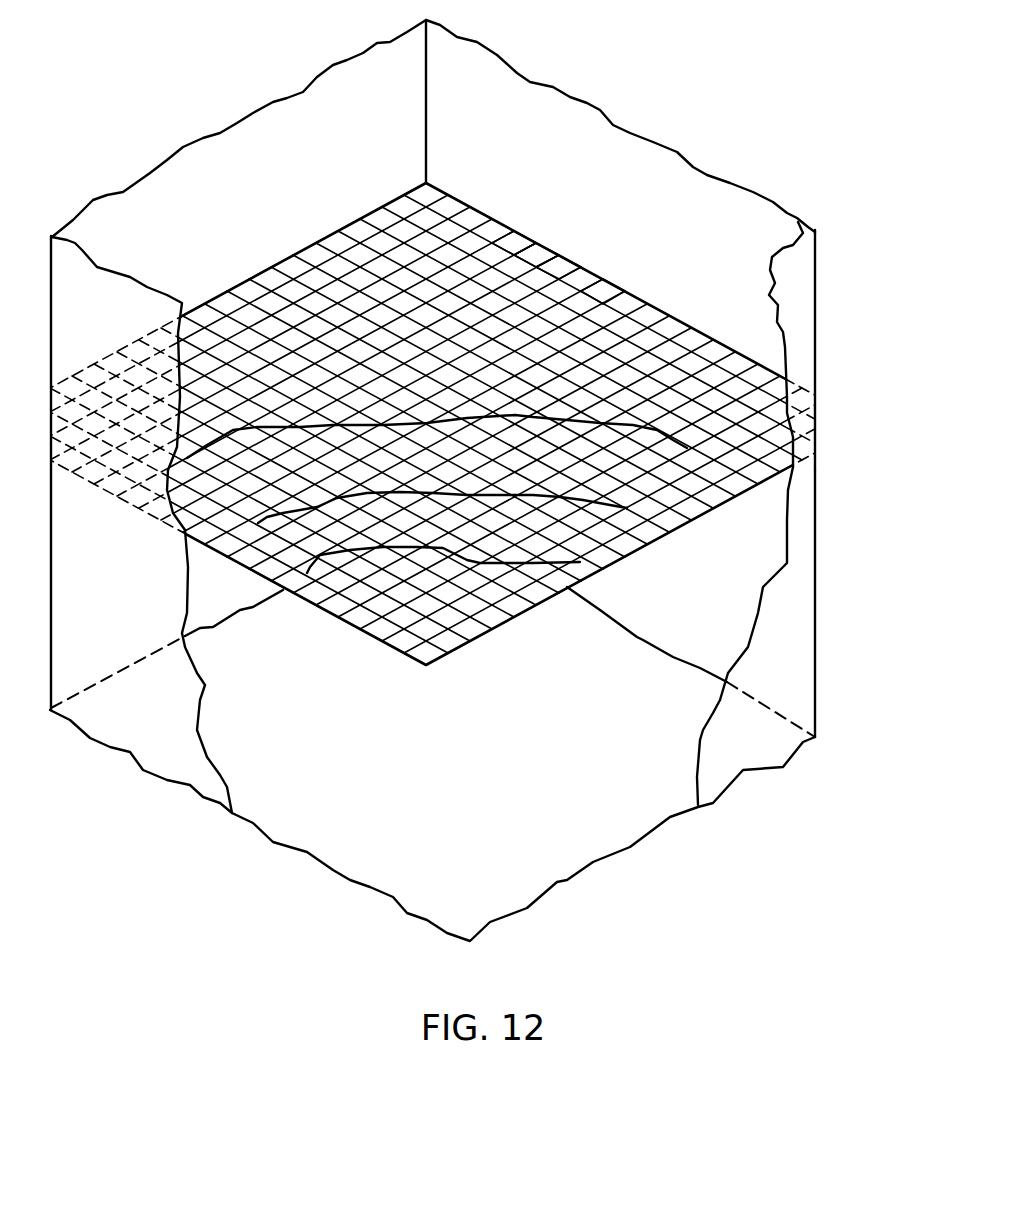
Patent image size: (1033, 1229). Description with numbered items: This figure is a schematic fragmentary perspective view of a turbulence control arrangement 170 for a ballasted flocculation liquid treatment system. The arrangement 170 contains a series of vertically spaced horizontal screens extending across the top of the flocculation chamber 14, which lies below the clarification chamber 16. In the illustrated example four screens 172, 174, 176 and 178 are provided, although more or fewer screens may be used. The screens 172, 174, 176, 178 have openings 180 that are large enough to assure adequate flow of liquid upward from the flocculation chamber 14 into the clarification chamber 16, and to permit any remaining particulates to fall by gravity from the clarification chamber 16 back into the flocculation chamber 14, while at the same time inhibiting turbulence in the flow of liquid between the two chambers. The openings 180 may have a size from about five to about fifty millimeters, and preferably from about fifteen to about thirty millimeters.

The flocculation chamber 14 is at (82, 660).
The clarification chamber 16 is at (88, 282).
The turbulence control arrangement 170 is at (340, 645).
The screen 172 is at (758, 358).
The screen 174 is at (795, 468).
The screen 176 is at (735, 497).
The screen 178 is at (738, 509).
The openings 180 is at (583, 299).